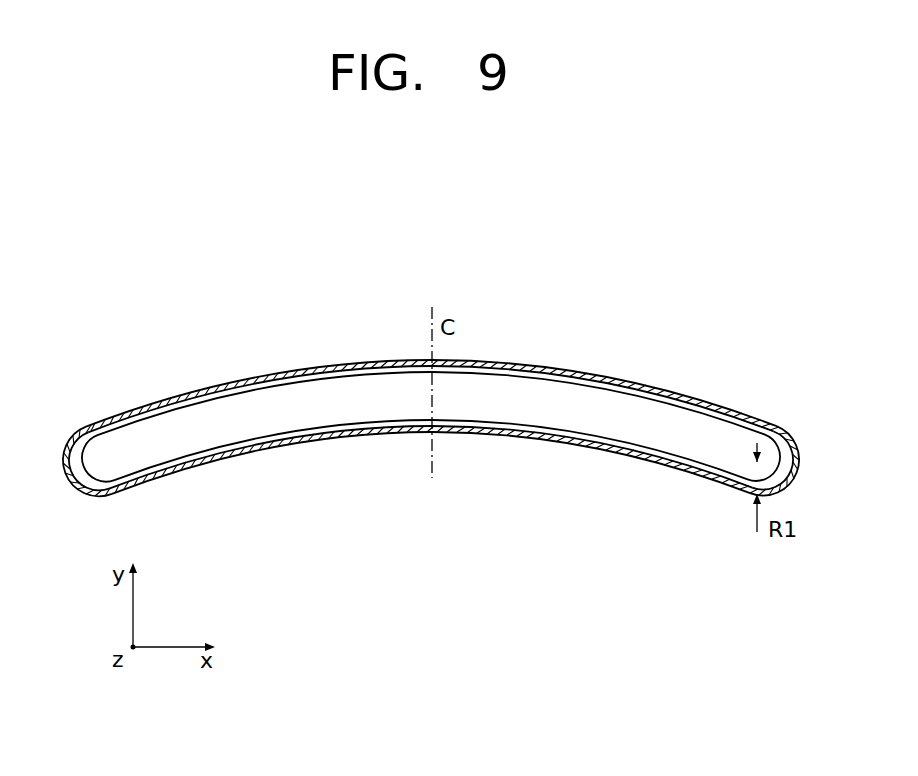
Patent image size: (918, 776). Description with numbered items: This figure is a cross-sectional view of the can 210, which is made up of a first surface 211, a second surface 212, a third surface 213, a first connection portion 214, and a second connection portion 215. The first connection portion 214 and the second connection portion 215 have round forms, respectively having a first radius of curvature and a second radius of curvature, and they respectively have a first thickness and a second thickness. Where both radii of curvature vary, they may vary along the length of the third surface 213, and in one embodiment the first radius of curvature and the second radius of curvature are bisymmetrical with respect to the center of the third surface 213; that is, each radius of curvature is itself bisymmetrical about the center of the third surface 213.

The can 210 is at (331, 320).
The first surface 211 is at (525, 365).
The second surface 212 is at (553, 440).
The third surface 213 is at (632, 412).
The first connection portion 214 is at (170, 407).
The second connection portion 215 is at (710, 468).